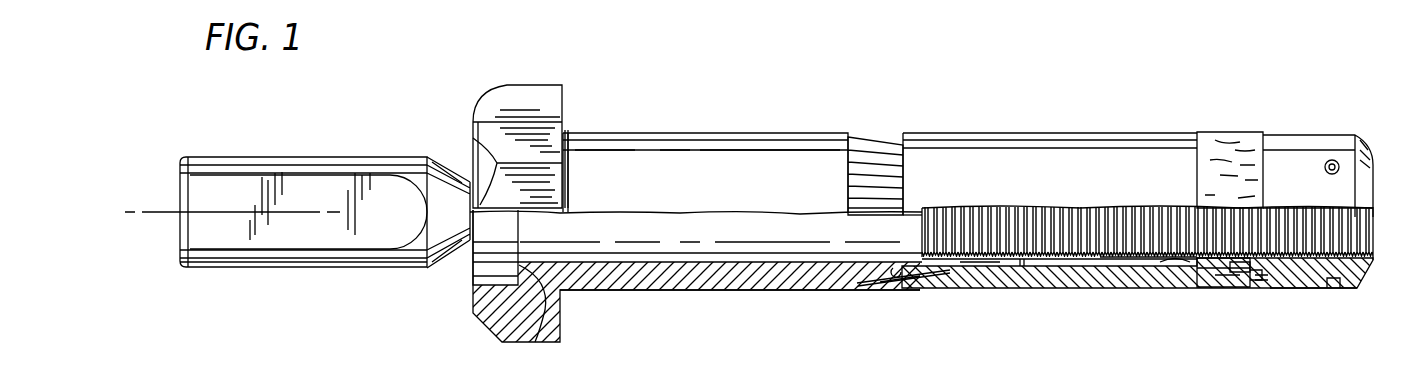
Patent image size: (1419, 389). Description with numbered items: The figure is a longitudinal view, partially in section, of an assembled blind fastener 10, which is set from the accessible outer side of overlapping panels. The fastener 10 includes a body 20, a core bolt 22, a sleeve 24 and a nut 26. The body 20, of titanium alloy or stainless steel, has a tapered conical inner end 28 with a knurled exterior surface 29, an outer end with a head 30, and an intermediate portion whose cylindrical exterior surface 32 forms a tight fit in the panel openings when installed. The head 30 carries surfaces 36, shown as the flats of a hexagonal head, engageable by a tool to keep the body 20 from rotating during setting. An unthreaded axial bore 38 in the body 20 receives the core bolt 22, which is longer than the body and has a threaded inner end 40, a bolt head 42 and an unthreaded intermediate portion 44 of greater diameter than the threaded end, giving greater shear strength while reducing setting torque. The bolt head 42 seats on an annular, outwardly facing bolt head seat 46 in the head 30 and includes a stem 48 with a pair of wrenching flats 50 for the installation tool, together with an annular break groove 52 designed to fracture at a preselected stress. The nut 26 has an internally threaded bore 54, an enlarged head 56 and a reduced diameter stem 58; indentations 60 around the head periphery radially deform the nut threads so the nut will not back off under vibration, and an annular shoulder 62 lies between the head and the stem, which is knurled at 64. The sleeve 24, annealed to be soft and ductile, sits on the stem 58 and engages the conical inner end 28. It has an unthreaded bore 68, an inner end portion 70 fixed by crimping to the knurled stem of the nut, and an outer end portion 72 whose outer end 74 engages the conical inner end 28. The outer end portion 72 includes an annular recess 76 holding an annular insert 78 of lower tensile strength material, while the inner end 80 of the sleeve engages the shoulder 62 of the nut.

The blind fastener 10 is at (757, 92).
The body 20 is at (600, 148).
The core bolt 22 is at (682, 213).
The sleeve 24 is at (1000, 133).
The nut 26 is at (1297, 135).
The conical inner end 28 is at (862, 284).
The knurled exterior surface 29 is at (862, 137).
The head 30 is at (490, 330).
The cylindrical exterior surface 32 is at (650, 133).
The surfaces 36 is at (512, 93).
The axial bore 38 is at (597, 262).
The threaded inner end 40 is at (1148, 257).
The bolt head 42 is at (468, 262).
The unthreaded intermediate portion 44 is at (768, 235).
The bolt head seat 46 is at (536, 342).
The stem 48 is at (303, 158).
The wrenching flats 50 is at (305, 262).
The break groove 52 is at (440, 262).
The internally threaded bore 54 is at (1372, 216).
The enlarged head 56 is at (1312, 288).
The stem 58 is at (1238, 272).
The indentations 60 is at (1333, 160).
The annular shoulder 62 is at (1252, 280).
The knurl 64 is at (1205, 278).
The unthreaded bore 68 is at (1170, 266).
The inner end portion 70 is at (1210, 132).
The outer end portion 72 is at (945, 288).
The outer end 74 is at (886, 284).
The annular recess 76 is at (975, 288).
The annular insert 78 is at (1025, 268).
The inner end 80 is at (1268, 278).